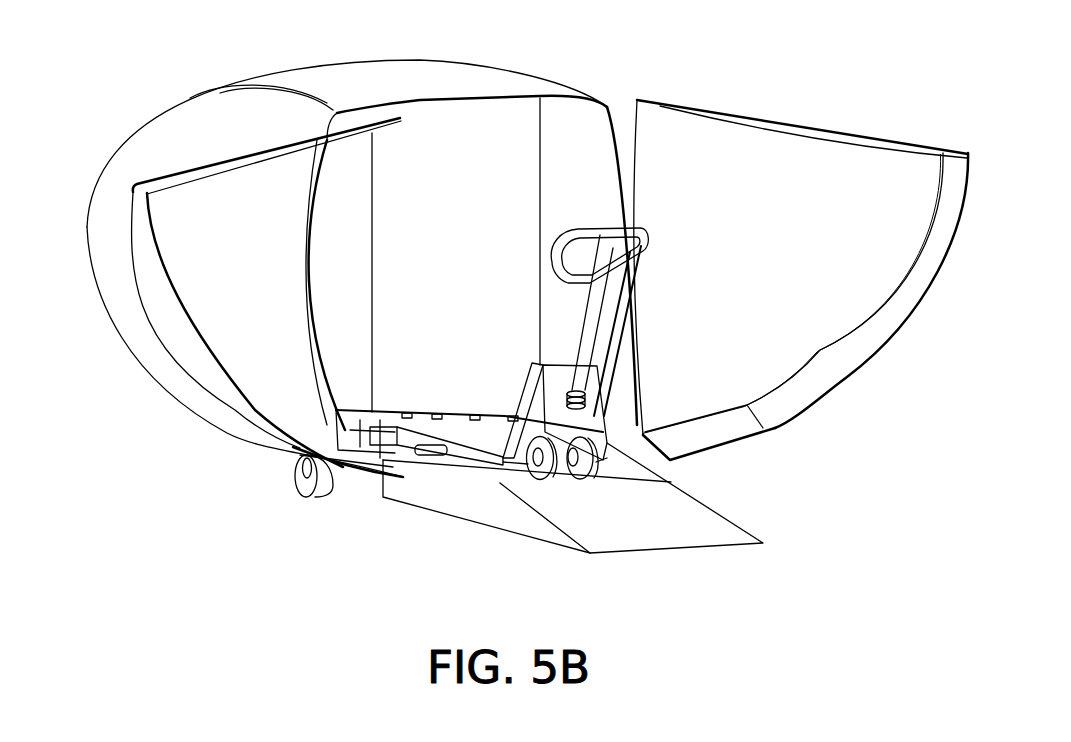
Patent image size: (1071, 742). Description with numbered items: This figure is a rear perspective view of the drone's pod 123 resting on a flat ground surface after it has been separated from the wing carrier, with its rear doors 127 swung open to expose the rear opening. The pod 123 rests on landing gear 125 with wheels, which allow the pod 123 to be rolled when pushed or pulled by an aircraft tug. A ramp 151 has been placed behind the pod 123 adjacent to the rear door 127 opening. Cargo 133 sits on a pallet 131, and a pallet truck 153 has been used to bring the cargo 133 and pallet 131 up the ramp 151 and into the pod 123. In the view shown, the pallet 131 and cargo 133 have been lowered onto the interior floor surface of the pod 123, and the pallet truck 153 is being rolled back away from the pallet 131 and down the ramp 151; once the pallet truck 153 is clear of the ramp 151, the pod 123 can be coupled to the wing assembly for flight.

The pod 123 is at (243, 118).
The landing gear 125 is at (306, 490).
The rear doors 127 is at (812, 298).
The pallet 131 is at (381, 458).
The cargo 133 is at (475, 175).
The ramp 151 is at (477, 497).
The pallet truck 153 is at (600, 435).